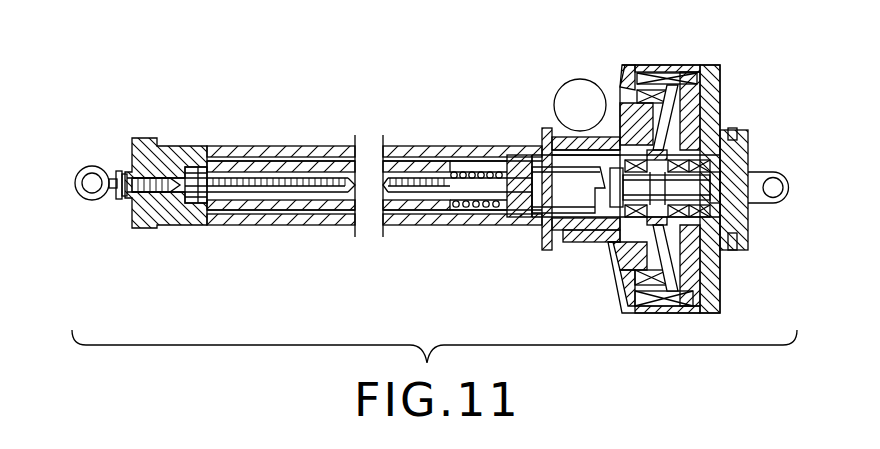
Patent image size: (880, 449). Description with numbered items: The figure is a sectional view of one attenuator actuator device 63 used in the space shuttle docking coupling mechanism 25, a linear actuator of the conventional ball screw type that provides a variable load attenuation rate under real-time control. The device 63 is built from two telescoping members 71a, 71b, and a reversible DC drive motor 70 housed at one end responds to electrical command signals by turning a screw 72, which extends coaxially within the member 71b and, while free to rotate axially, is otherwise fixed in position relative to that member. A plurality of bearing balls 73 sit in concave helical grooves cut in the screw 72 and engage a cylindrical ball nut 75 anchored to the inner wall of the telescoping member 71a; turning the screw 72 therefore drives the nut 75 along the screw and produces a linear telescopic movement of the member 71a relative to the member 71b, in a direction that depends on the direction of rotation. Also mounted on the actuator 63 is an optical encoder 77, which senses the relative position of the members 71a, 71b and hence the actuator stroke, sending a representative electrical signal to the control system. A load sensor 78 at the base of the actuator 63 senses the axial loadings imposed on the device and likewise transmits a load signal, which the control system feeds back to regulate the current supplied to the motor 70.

The linear actuator assembly 25 is at (495, 10).
The attenuator actuator device 63 is at (332, 142).
The reversible drive motor 70 is at (686, 58).
The telescoping member 71a is at (308, 201).
The telescoping member 71b is at (433, 147).
The screw 72 is at (242, 196).
The bearing balls 73 is at (497, 171).
The ball nut 75 is at (455, 206).
The optical encoder 77 is at (566, 82).
The load sensor 78 is at (762, 169).